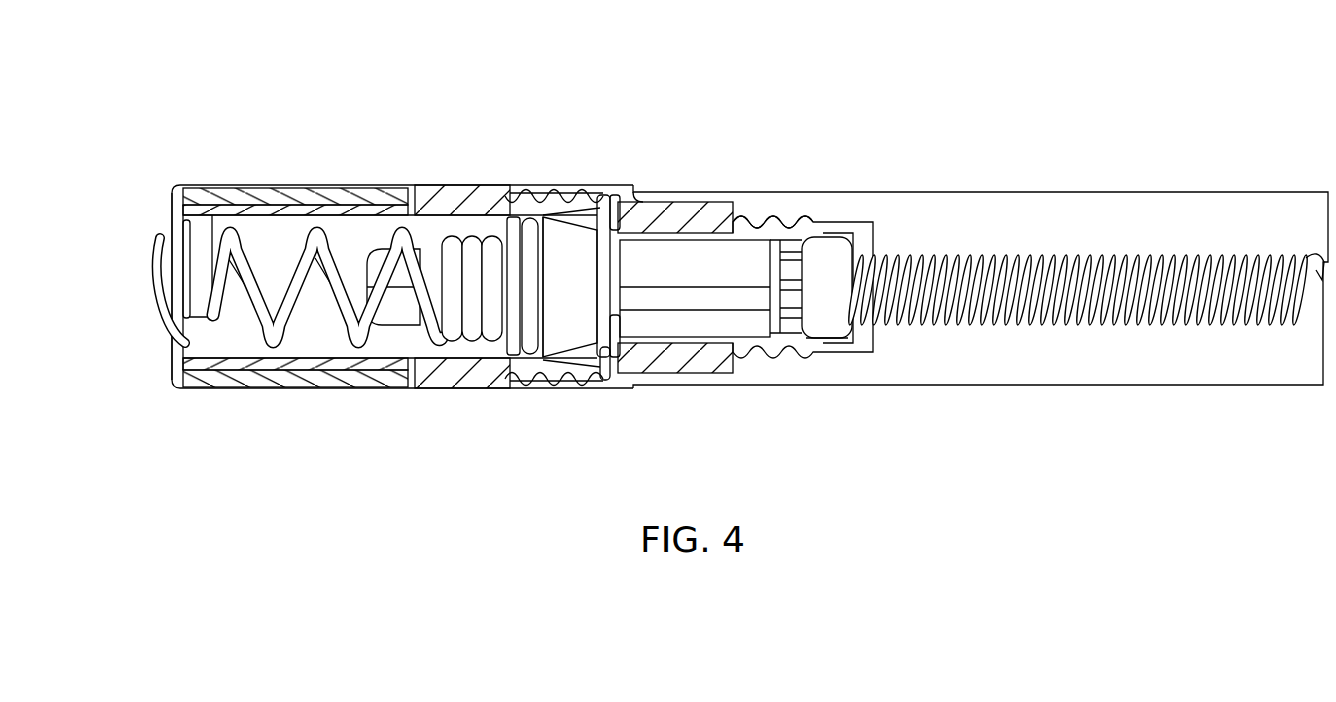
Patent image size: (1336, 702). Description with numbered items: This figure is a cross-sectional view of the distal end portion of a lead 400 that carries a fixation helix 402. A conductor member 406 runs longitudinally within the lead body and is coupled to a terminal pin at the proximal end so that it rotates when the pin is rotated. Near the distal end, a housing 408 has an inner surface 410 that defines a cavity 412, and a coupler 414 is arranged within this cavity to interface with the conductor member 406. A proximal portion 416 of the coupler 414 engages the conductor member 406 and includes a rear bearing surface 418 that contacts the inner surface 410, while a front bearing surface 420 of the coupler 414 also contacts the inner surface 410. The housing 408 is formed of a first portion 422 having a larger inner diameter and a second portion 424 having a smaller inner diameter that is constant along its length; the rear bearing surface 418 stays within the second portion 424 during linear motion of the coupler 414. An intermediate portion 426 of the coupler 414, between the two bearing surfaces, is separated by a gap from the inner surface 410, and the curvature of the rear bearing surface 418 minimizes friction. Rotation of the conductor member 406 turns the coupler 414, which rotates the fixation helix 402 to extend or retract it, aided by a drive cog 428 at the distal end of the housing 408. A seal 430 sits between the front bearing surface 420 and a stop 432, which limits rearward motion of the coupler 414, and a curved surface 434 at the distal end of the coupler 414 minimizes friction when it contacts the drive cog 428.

The lead 400 is at (128, 140).
The fixation helix 402 is at (160, 268).
The conductor member 406 is at (1125, 270).
The housing 408 is at (458, 182).
The inner surface 410 is at (367, 187).
The cavity 412 is at (322, 188).
The coupler 414 is at (677, 323).
The proximal portion 416 is at (822, 337).
The rear bearing surface 418 is at (825, 248).
The front bearing surface 420 is at (530, 338).
The first portion 422 is at (445, 375).
The second portion 424 is at (730, 365).
The intermediate portion 426 is at (650, 237).
The drive cog 428 is at (198, 290).
The seal 430 is at (555, 237).
The stop 432 is at (610, 363).
The curved surface 434 is at (387, 308).